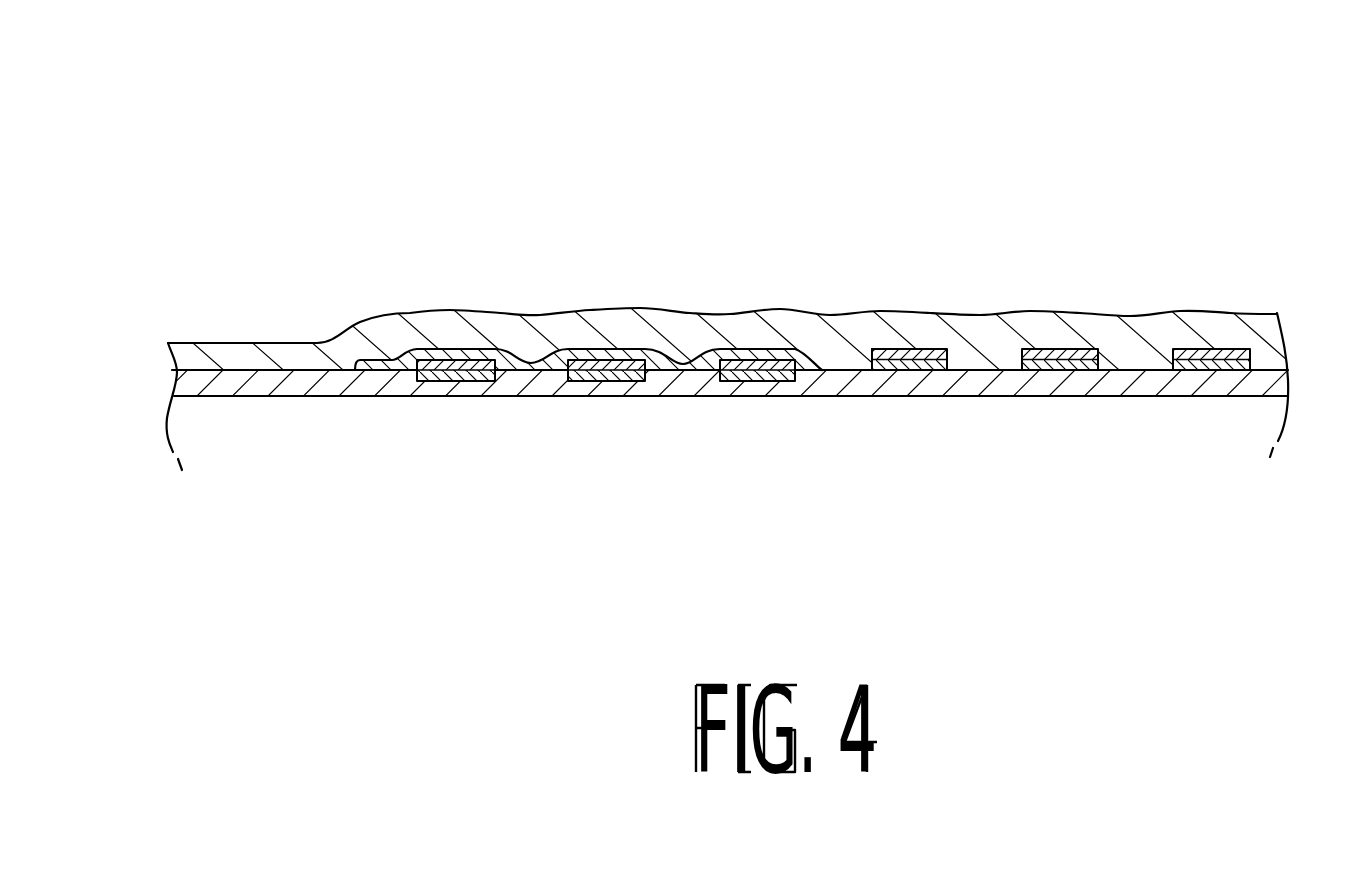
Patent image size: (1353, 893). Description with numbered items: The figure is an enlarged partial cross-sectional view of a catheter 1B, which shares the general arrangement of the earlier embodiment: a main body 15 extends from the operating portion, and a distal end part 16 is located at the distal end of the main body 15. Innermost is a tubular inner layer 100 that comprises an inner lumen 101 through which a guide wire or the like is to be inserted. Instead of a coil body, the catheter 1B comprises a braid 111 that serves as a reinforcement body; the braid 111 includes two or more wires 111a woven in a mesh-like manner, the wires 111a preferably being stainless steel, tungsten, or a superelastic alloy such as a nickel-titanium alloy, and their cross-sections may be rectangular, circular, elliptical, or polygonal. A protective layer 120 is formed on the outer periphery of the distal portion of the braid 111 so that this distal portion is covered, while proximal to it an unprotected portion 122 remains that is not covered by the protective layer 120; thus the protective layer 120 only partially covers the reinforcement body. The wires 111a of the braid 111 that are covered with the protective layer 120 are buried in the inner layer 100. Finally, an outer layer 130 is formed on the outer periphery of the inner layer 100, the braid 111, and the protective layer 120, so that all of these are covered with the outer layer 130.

The catheter 1B is at (1018, 157).
The main body 15 is at (530, 313).
The distal end part 16 is at (243, 343).
The inner layer 100 is at (746, 497).
The inner lumen 101 is at (983, 370).
The braid 111 is at (859, 493).
The wires 111a is at (1223, 363).
The protective layer 120 is at (515, 360).
The unprotected portion 122 is at (880, 337).
The outer layer 130 is at (1202, 325).